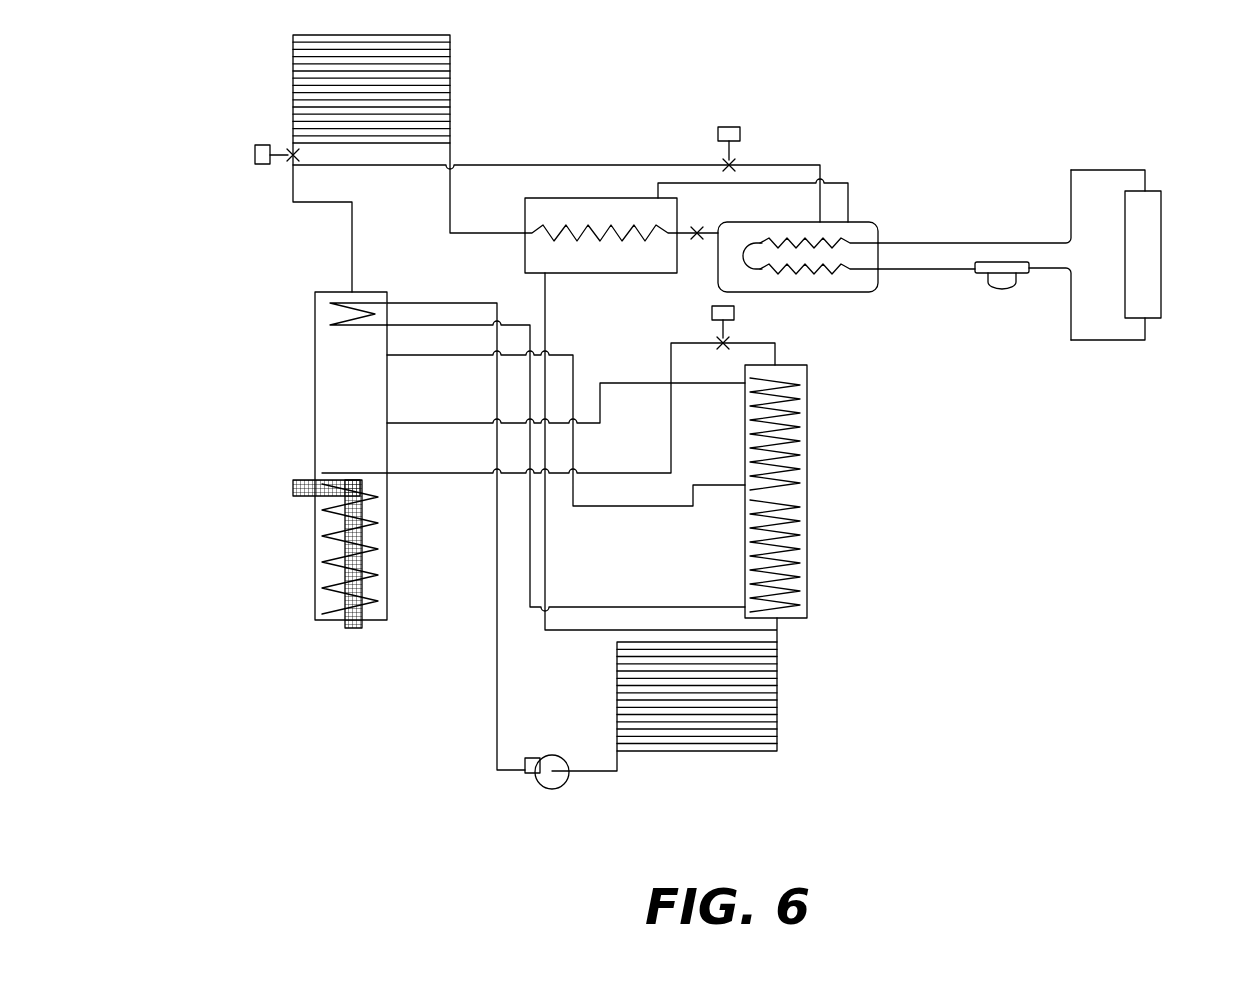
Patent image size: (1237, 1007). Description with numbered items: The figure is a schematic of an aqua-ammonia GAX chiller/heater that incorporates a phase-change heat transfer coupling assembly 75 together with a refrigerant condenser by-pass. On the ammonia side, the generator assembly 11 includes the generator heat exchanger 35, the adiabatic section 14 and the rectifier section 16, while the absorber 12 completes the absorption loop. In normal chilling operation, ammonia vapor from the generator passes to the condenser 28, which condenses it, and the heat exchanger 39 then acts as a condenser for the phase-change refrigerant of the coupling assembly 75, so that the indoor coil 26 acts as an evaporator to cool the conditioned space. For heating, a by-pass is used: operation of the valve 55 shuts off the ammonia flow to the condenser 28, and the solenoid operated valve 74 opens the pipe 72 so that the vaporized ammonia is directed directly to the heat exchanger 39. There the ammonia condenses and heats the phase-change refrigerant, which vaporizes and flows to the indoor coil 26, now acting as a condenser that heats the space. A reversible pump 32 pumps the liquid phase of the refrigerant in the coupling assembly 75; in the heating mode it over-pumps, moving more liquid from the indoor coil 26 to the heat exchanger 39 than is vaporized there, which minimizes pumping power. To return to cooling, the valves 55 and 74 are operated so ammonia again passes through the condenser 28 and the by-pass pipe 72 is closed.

The generator assembly 11 is at (247, 437).
The absorber 12 is at (777, 712).
The adiabatic section 14 is at (315, 385).
The rectifier section 16 is at (315, 322).
The indoor coil 26 is at (1161, 224).
The condenser 28 is at (293, 93).
The reversible pump 32 is at (1004, 289).
The generator heat exchanger 35 is at (315, 588).
The heat exchanger 39 is at (878, 222).
The valve 55 is at (290, 158).
The pipe 72 is at (570, 162).
The solenoid operated valve 74 is at (732, 162).
The heat transfer coupling assembly 75 is at (1030, 210).